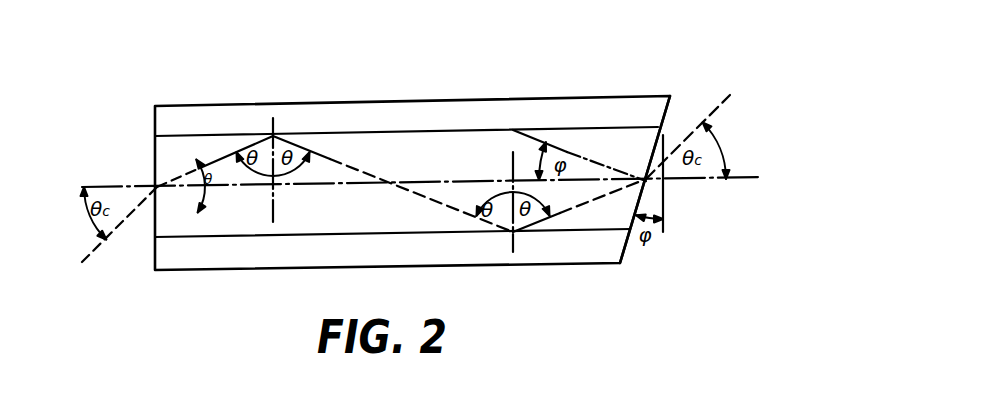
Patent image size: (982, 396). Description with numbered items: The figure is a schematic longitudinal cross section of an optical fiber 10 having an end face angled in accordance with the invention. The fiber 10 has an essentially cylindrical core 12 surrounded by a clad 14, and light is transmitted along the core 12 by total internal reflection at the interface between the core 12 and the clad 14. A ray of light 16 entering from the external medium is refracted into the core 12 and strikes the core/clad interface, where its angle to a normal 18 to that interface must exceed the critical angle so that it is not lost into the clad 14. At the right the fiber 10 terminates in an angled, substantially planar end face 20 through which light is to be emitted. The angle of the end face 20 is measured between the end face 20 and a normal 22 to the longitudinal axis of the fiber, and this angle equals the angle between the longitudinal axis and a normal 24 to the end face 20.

The optical fiber 10 is at (530, 275).
The core 12 is at (192, 227).
The clad 14 is at (572, 106).
The ray of light 16 is at (178, 182).
The normal 18 is at (268, 122).
The end face 20 is at (618, 263).
The normal 22 is at (665, 198).
The normal 24 is at (598, 152).